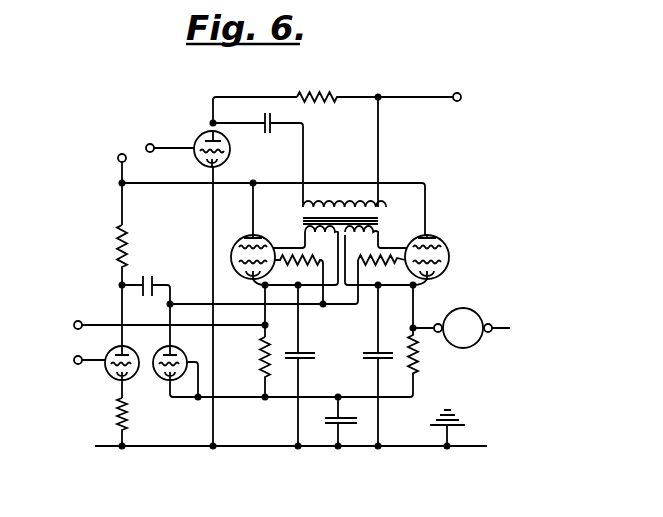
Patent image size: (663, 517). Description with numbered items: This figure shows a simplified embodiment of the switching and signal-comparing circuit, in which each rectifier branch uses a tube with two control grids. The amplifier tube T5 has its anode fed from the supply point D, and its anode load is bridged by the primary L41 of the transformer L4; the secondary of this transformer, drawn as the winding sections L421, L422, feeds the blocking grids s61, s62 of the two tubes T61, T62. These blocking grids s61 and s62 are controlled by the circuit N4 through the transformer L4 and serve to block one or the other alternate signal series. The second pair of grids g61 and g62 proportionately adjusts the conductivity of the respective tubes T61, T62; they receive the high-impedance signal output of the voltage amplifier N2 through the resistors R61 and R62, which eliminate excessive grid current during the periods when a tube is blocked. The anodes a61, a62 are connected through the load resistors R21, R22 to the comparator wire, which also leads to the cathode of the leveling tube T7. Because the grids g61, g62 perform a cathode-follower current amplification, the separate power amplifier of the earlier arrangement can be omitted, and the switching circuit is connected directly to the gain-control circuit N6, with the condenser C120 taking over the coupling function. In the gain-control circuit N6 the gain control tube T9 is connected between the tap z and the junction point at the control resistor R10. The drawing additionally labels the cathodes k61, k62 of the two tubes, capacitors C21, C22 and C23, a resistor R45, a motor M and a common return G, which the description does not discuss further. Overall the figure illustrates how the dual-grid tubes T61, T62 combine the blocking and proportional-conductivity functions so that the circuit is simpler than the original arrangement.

The voltage amplifier N2 is at (117, 158).
The circuit N4 is at (150, 144).
The gain-control circuit N6 is at (75, 357).
The supply point D is at (462, 98).
The amplifier tube T5 is at (200, 137).
The tube T61 is at (232, 249).
The anode a61 is at (258, 234).
The blocking grid s61 is at (232, 247).
The control grid g61 is at (232, 262).
The cathode of tube T61 k61 is at (244, 275).
The tube T62 is at (448, 246).
The anode a62 is at (433, 238).
The blocking grid s62 is at (449, 256).
The control grid g62 is at (448, 266).
The cathode of tube T62 k62 is at (436, 280).
The transformer L4 is at (355, 223).
The primary L41 is at (325, 200).
The secondary winding L421 is at (301, 255).
The secondary winding L422 is at (379, 255).
The control resistor R10 is at (116, 244).
The condenser C120 is at (136, 290).
The resistor R61 is at (299, 279).
The resistor R62 is at (381, 268).
The load resistor R21 is at (263, 345).
The load resistor R22 is at (420, 366).
The capacitor C21 is at (296, 352).
The capacitor C22 is at (369, 365).
The capacitor C23 is at (330, 424).
The motor M is at (461, 328).
The gain control tube T9 is at (105, 375).
The leveling tube T7 is at (160, 380).
The resistor R45 is at (120, 425).
The ground bus G is at (254, 445).
The tap z is at (308, 397).